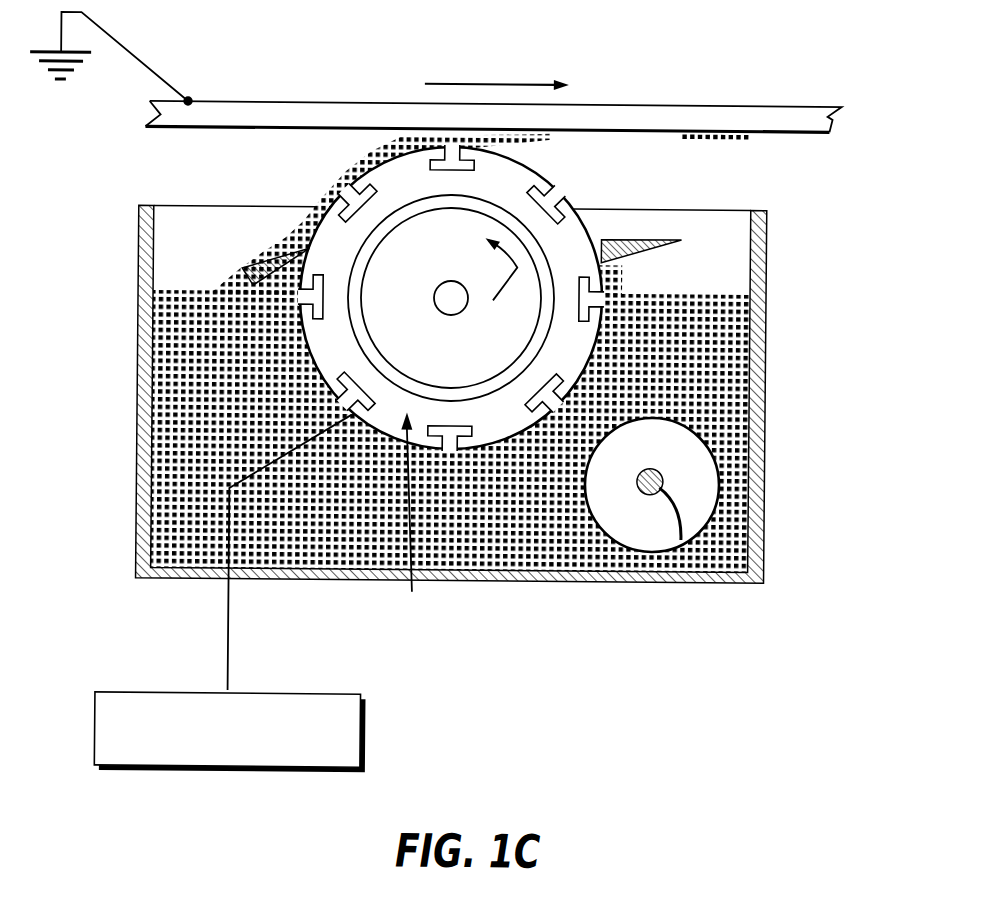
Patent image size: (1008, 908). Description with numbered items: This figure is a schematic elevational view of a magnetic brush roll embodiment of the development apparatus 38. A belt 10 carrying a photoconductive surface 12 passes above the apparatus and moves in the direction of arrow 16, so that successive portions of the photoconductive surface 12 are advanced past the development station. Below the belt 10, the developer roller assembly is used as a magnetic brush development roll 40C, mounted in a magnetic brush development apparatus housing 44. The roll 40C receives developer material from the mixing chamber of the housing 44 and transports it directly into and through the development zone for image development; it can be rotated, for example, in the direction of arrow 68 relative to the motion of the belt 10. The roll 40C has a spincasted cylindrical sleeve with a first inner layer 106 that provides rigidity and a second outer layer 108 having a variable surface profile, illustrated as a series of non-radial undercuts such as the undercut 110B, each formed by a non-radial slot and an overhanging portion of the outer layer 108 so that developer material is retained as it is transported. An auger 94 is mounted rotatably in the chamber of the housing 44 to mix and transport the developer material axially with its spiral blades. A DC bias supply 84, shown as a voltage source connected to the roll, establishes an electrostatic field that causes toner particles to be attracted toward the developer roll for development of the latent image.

The belt 10 is at (609, 87).
The photoconductive surface 12 is at (771, 129).
The arrow 16 is at (505, 82).
The development apparatus 38 is at (812, 149).
The magnetic brush development roll 40C is at (606, 220).
The housing 44 is at (764, 257).
The arrow 68 is at (497, 285).
The DC bias supply 84 is at (357, 738).
The auger 94 is at (624, 504).
The first inner layer 106 is at (378, 225).
The second outer layer 108 is at (416, 515).
The undercut 110B is at (343, 191).